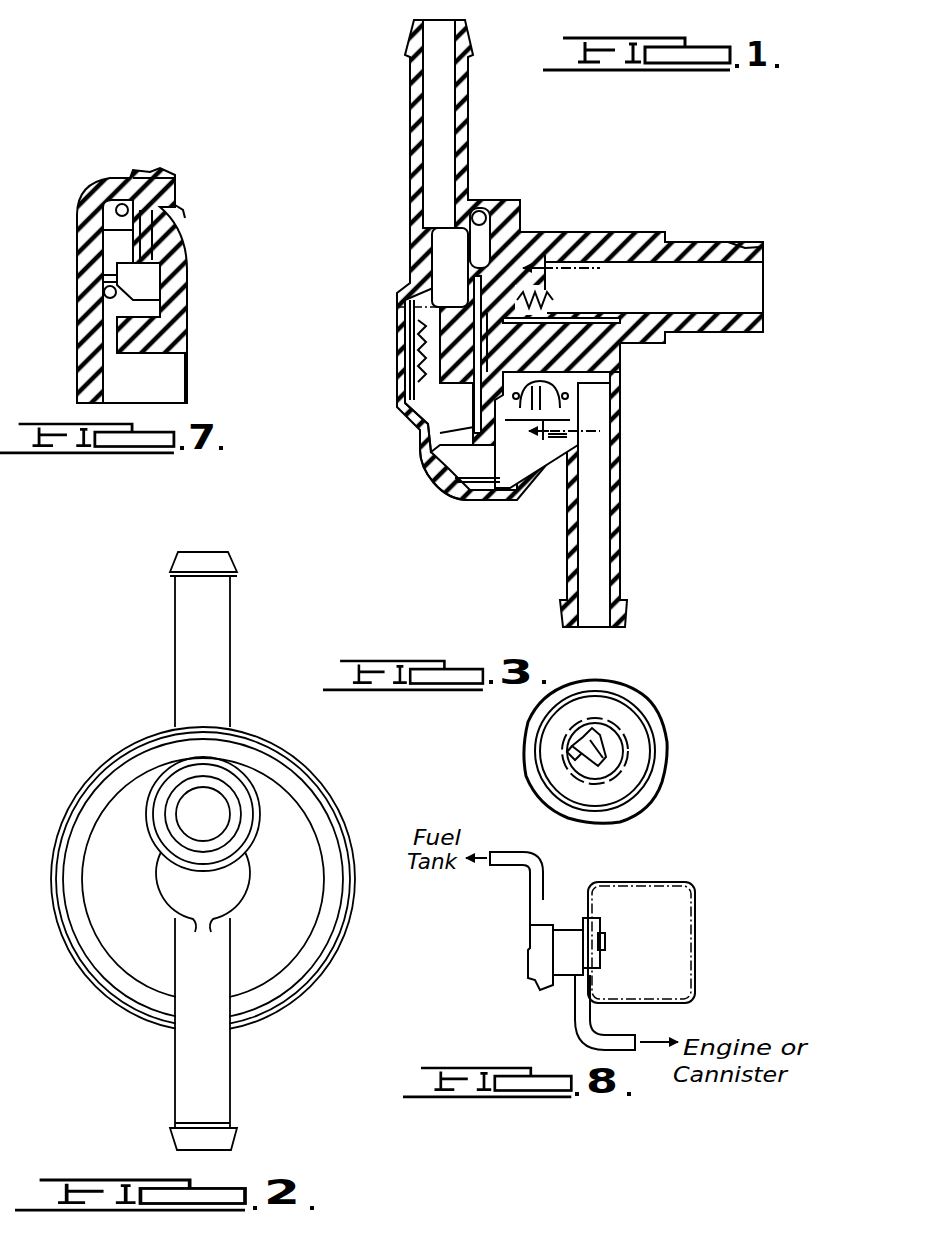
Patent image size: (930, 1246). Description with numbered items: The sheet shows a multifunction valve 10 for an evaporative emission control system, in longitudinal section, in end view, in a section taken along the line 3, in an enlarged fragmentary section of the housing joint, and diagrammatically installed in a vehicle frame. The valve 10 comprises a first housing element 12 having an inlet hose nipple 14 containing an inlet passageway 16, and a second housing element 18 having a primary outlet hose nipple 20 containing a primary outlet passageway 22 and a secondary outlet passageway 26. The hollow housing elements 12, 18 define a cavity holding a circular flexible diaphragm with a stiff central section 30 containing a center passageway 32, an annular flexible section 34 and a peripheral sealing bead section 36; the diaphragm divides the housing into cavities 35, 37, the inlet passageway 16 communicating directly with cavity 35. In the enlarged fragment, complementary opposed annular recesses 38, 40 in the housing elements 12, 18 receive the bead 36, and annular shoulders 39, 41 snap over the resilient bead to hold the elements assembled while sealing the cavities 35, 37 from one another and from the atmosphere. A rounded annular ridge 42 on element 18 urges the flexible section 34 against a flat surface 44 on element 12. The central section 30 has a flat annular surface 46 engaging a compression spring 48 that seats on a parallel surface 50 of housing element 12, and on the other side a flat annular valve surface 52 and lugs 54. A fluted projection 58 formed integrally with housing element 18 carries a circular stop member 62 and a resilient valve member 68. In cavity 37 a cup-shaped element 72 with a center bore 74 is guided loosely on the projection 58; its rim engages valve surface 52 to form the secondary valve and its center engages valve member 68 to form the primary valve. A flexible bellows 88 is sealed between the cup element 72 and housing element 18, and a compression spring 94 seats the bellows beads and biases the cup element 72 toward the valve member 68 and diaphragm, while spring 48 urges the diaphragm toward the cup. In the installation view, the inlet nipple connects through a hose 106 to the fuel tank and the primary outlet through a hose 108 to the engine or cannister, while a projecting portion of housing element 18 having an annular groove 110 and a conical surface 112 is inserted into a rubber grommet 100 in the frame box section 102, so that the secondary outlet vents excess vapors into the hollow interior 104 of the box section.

In FIG. 1, the multifunction valve 10 is at (593, 224).
In FIG. 2, the multifunction valve 10 is at (90, 1002).
In FIG. 8, the multifunction valve 10 is at (526, 954).
In FIG. 1, the first housing element 12 is at (450, 452).
In FIG. 7, the first housing element 12 is at (97, 340).
In FIG. 2, the first housing element 12 is at (321, 788).
In FIG. 1, the inlet tubing or hose nipple 14 is at (462, 70).
In FIG. 2, the inlet tubing or hose nipple 14 is at (215, 608).
In FIG. 1, the inlet passageway 16 is at (421, 100).
In FIG. 1, the second housing element 18 is at (632, 347).
In FIG. 7, the second housing element 18 is at (167, 337).
In FIG. 2, the second housing element 18 is at (318, 830).
In FIG. 1, the primary outlet hose nipple 20 is at (625, 498).
In FIG. 2, the primary outlet hose nipple 20 is at (187, 1071).
In FIG. 1, the primary outlet passageway 22 is at (608, 533).
In FIG. 1, the secondary outlet passageway 26 is at (748, 262).
In FIG. 2, the secondary outlet passageway 26 is at (214, 795).
In FIG. 1, the central section 30 is at (403, 292).
In FIG. 1, the center passageway 32 is at (450, 366).
In FIG. 1, the annular flexible section 34 is at (457, 480).
In FIG. 7, the annular flexible section 34 is at (172, 202).
In FIG. 1, the cavity 35 is at (440, 452).
In FIG. 1, the peripheral sealing bead section 36 is at (480, 211).
In FIG. 7, the peripheral sealing bead section 36 is at (114, 305).
In FIG. 1, the cavity 37 is at (522, 445).
In FIG. 7, the annular recess 38 is at (105, 233).
In FIG. 7, the annular shoulder 39 is at (105, 275).
In FIG. 7, the annular recess 40 is at (152, 293).
In FIG. 7, the annular shoulder 41 is at (147, 255).
In FIG. 7, the rounded annular ridge 42 is at (176, 216).
In FIG. 7, the flat surface 44 is at (122, 203).
In FIG. 1, the flat transverse annular surface 46 is at (457, 323).
In FIG. 1, the compression spring 48 is at (406, 322).
In FIG. 1, the parallel surface 50 is at (416, 355).
In FIG. 1, the flat transverse annular valve surface 52 is at (450, 428).
In FIG. 1, the lugs 54 is at (532, 228).
In FIG. 1, the fluted projection 58 is at (553, 342).
In FIG. 3, the fluted projection 58 is at (617, 756).
In FIG. 1, the circular stop member 62 is at (478, 488).
In FIG. 1, the resilient valve member 68 is at (523, 448).
In FIG. 3, the resilient valve member 68 is at (612, 778).
In FIG. 1, the cup-shaped element 72 is at (520, 212).
In FIG. 3, the cup-shaped element 72 is at (641, 819).
In FIG. 3, the center bore 74 is at (567, 750).
In FIG. 3, the flexible bellows 88 is at (620, 741).
In FIG. 1, the compression spring 94 is at (566, 303).
In FIG. 3, the compression spring 94 is at (629, 713).
In FIG. 8, the rubber grommet 100 is at (603, 963).
In FIG. 8, the box section 102 is at (681, 881).
In FIG. 8, the hollow interior 104 is at (672, 919).
In FIG. 8, the hose 106 is at (516, 861).
In FIG. 8, the hose 108 is at (632, 1046).
In FIG. 1, the annular groove 110 is at (670, 240).
In FIG. 1, the conical surface 112 is at (742, 242).
In FIG. 1, the section line 3 is at (580, 328).